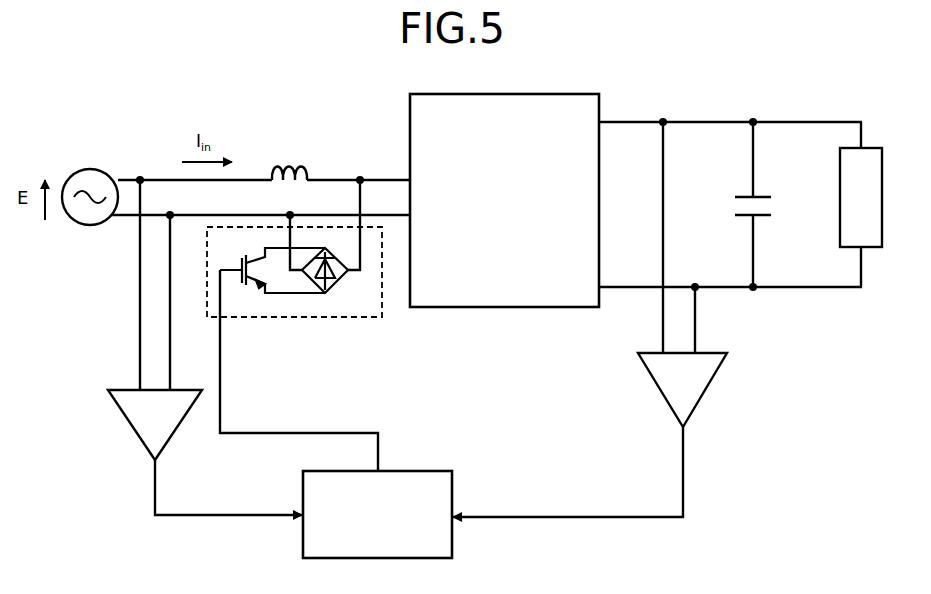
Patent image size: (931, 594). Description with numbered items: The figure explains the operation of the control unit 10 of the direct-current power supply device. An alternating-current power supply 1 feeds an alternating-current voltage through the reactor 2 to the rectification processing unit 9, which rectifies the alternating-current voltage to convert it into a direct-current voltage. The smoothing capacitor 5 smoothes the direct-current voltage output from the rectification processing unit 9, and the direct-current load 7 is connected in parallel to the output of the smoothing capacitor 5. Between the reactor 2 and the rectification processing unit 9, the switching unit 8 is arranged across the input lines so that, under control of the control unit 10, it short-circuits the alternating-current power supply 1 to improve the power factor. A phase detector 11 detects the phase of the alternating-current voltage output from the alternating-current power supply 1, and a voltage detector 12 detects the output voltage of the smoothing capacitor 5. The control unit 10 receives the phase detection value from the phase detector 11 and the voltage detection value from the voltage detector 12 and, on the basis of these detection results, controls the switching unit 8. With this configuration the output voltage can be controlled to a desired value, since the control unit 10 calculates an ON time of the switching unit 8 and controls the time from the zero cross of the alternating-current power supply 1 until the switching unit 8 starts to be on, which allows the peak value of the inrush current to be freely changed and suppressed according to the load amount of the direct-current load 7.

The alternating-current power supply 1 is at (88, 170).
The reactor 2 is at (288, 164).
The smoothing capacitor 5 is at (763, 193).
The direct-current load 7 is at (866, 147).
The switching unit 8 is at (362, 319).
The rectification processing unit 9 is at (573, 309).
The control unit 10 is at (413, 471).
The phase detector 11 is at (172, 432).
The voltage detector 12 is at (703, 395).